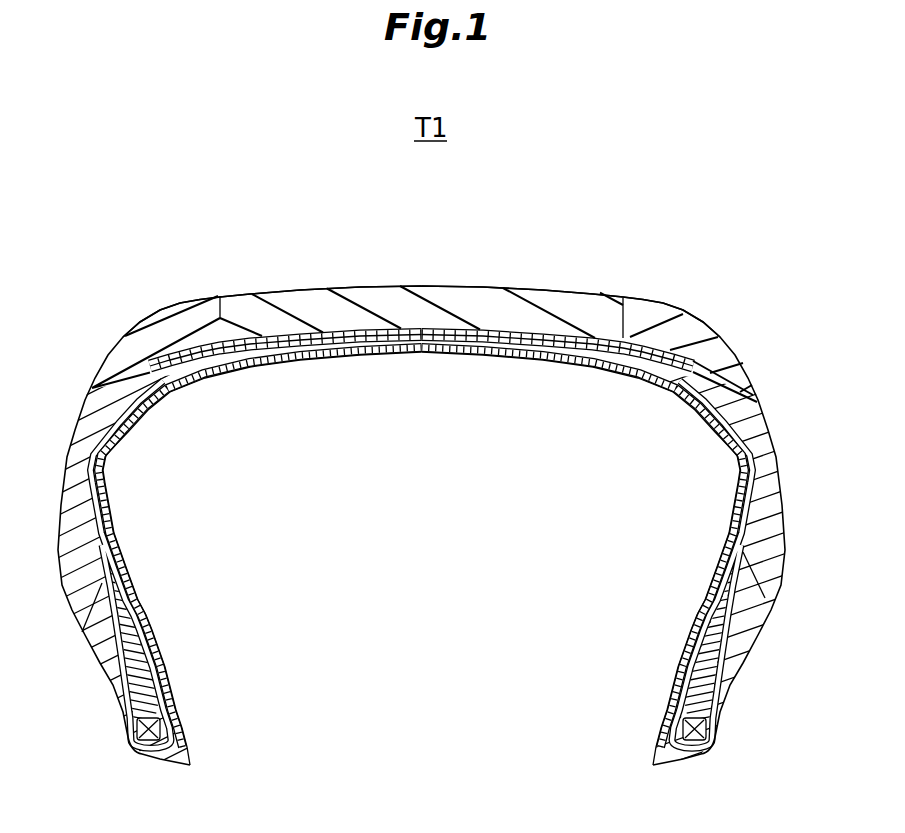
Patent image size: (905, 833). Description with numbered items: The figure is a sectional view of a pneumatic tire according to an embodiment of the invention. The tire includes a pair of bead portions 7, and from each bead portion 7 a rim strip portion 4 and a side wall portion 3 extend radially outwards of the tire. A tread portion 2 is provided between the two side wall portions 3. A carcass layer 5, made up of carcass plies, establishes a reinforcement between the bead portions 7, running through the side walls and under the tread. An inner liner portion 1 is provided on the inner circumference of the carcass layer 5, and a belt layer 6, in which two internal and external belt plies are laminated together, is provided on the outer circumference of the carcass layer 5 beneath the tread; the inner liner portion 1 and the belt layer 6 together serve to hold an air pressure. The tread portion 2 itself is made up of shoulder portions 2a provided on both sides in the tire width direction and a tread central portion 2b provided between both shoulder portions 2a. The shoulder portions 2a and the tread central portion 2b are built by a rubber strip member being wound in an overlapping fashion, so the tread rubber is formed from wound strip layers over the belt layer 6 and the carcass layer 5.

The inner liner portion 1 is at (431, 355).
The tread portion 2 is at (500, 274).
The shoulder portion 2a is at (177, 322).
The tread central portion 2b is at (425, 310).
The side wall portion 3 is at (76, 433).
The rim strip portion 4 is at (92, 623).
The carcass layer 5 is at (700, 613).
The belt layer 6 is at (297, 334).
The bead portion 7 is at (162, 727).